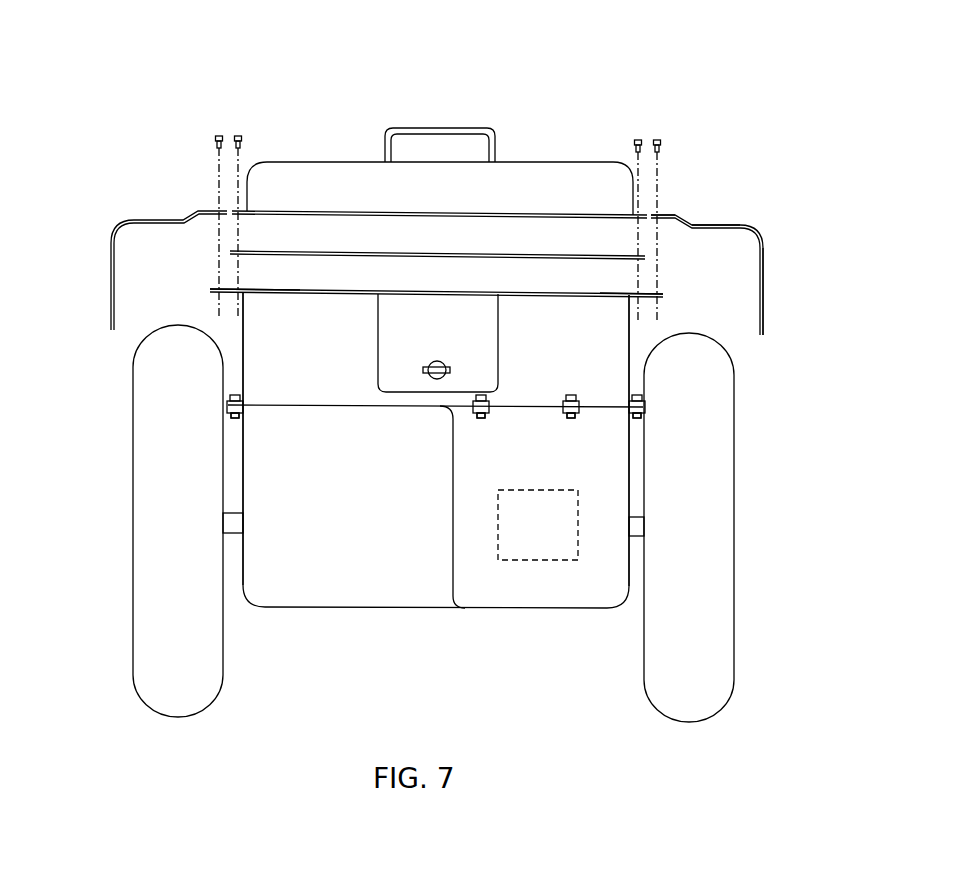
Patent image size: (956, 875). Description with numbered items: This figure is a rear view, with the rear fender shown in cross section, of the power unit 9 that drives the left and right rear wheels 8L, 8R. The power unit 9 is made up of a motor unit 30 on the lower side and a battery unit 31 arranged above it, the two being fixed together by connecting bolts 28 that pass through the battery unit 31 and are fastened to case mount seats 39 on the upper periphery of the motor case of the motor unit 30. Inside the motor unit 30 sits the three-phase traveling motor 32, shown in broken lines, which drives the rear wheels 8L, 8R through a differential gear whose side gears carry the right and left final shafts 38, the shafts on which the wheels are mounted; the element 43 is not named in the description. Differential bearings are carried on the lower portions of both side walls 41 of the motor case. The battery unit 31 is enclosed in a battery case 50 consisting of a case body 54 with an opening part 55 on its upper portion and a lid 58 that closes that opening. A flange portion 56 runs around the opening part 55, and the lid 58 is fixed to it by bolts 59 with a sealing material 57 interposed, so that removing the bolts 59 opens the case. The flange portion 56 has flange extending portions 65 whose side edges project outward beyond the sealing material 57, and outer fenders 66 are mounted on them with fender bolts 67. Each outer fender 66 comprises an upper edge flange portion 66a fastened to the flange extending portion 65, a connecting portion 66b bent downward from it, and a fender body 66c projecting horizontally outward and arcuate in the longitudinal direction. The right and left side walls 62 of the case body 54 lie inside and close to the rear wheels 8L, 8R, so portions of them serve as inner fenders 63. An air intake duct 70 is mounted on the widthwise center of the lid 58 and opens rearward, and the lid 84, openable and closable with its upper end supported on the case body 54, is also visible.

The power unit 9 is at (533, 124).
The air intake duct 70 is at (442, 127).
The lid 58 is at (293, 160).
The battery case 50 is at (551, 346).
The battery unit 31 is at (558, 191).
The bolts 59 is at (239, 135).
The fender bolts 67 is at (219, 135).
The outer fender 66 is at (158, 218).
The upper edge flange portion 66a is at (663, 215).
The connecting portion 66b is at (713, 223).
The fender body 66c is at (767, 268).
The sealing material 57 is at (613, 253).
The opening part 55 is at (628, 292).
The flange portion 56 is at (655, 290).
The flange extending portion 65 is at (665, 291).
The case body 54 is at (633, 330).
The side walls 62 is at (476, 385).
The inner fenders 63 is at (243, 328).
The lid 84 is at (390, 328).
The connecting bolts 28 is at (235, 393).
The case mount seats 39 is at (241, 415).
The side walls 41 is at (242, 478).
The final shafts 38 is at (530, 533).
The axle support 43 is at (637, 527).
The left rear wheel 8L is at (133, 598).
The right rear wheel 8R is at (734, 608).
The motor 32 is at (535, 560).
The motor unit 30 is at (577, 597).